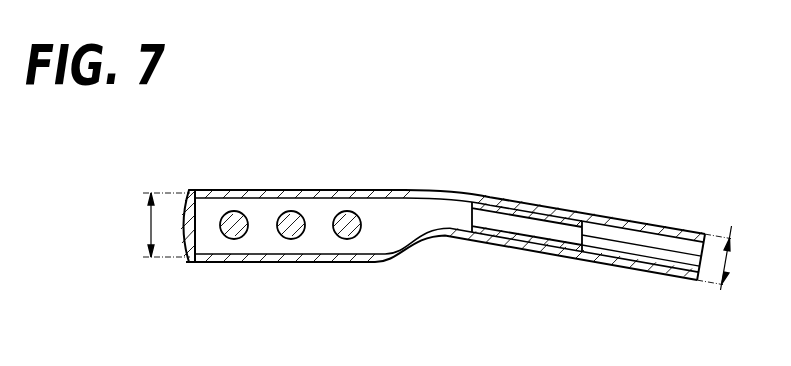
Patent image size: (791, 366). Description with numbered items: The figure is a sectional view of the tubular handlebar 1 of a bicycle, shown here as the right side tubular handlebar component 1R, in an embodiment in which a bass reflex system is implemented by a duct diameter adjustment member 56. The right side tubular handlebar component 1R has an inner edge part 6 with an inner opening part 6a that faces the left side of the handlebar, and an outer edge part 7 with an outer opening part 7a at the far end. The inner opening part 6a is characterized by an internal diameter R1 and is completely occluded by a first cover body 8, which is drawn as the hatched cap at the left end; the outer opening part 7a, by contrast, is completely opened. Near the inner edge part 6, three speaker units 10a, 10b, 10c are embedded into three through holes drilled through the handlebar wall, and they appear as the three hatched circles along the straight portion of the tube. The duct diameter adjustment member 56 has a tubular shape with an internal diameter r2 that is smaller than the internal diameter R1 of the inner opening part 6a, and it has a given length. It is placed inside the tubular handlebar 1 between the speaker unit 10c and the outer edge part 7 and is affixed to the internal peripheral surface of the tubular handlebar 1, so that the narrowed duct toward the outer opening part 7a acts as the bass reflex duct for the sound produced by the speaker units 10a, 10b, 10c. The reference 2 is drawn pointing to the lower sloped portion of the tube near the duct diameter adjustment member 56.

The tubular handlebar 1 is at (273, 88).
The right side tubular handlebar component 1R is at (435, 188).
The shaft portion 2 is at (517, 262).
The inner edge part 6 is at (226, 263).
The inner opening part 6a is at (186, 264).
The outer edge part 7 is at (690, 232).
The outer opening part 7a is at (713, 231).
The first cover body 8 is at (185, 202).
The speaker unit 10a is at (233, 215).
The speaker unit 10b is at (290, 215).
The speaker unit 10c is at (346, 214).
The duct diameter adjustment member 56 is at (536, 212).
The internal diameter R1 is at (157, 225).
The internal diameter r2 is at (726, 258).